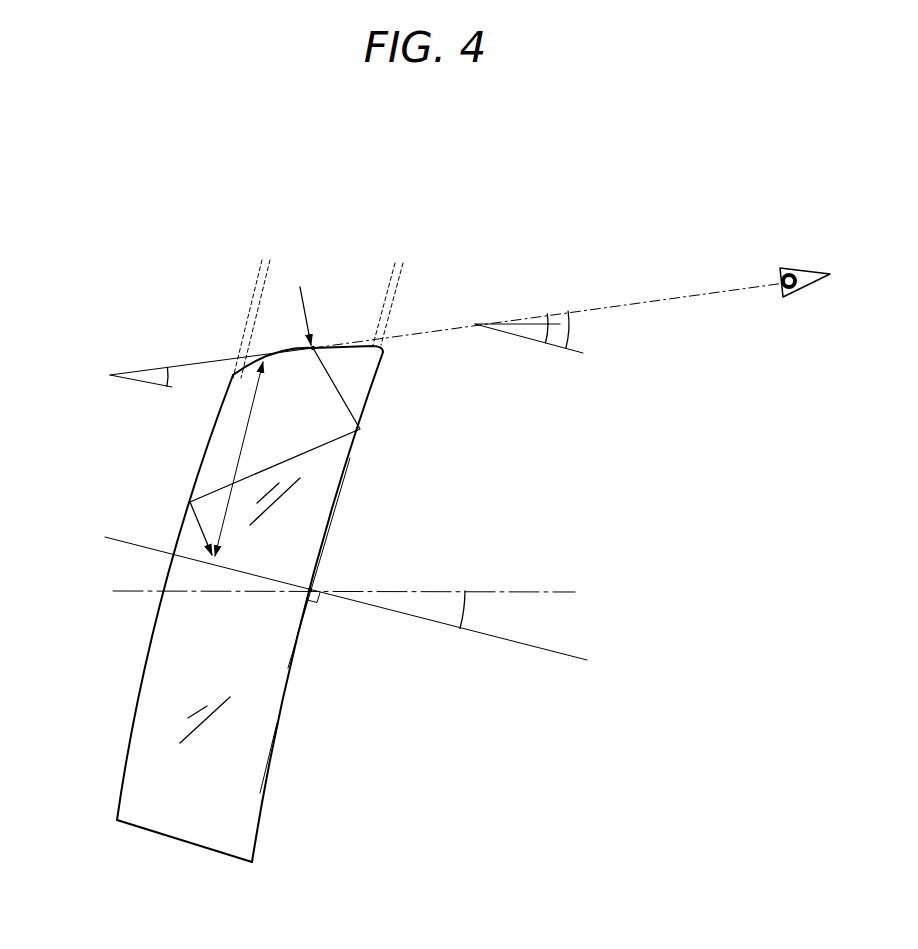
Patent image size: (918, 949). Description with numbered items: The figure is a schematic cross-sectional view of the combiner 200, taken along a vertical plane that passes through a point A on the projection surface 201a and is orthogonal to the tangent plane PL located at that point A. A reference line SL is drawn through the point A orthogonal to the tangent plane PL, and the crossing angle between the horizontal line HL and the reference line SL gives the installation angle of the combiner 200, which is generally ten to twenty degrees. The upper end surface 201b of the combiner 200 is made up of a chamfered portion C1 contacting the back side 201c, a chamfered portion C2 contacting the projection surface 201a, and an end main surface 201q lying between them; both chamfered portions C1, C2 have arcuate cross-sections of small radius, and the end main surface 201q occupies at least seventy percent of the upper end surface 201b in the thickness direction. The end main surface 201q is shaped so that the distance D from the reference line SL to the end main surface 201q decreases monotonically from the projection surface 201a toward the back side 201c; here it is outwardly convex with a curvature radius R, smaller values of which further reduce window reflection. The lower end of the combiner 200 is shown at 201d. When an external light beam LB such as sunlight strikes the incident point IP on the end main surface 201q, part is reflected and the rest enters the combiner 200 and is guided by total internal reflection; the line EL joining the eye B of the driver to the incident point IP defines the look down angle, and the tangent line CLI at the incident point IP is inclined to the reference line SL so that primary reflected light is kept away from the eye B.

The combiner 200 is at (218, 541).
The projection surface 201a is at (273, 748).
The upper end surface 201b is at (270, 188).
The back side 201c is at (123, 772).
The bottom surface 201d is at (180, 841).
The end main surface 201q is at (292, 352).
The chamfered portion C1 is at (258, 250).
The chamfered portion C2 is at (390, 258).
The tangent line CLI is at (213, 352).
The external light beam LB is at (300, 303).
The incident point IP is at (317, 347).
The line connecting eye center with incident point EL is at (690, 296).
The eye B is at (790, 268).
The distance D is at (238, 459).
The curvature radius R is at (284, 364).
The tangent plane PL is at (348, 470).
The point A is at (312, 590).
The horizontal line HL is at (548, 592).
The reference line SL is at (587, 660).